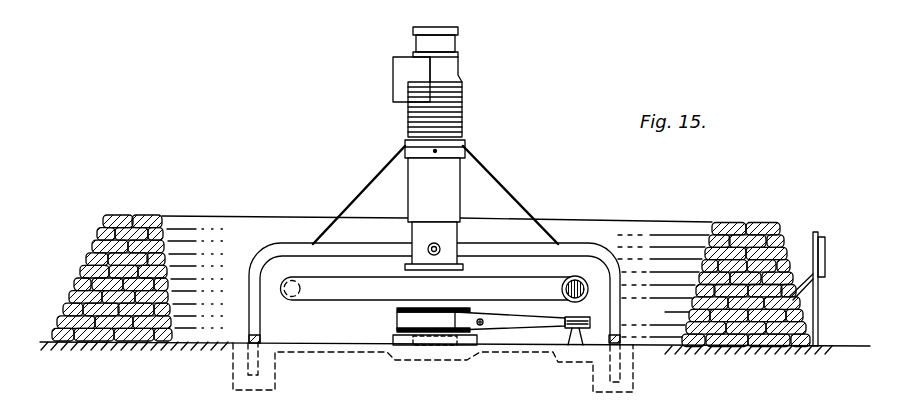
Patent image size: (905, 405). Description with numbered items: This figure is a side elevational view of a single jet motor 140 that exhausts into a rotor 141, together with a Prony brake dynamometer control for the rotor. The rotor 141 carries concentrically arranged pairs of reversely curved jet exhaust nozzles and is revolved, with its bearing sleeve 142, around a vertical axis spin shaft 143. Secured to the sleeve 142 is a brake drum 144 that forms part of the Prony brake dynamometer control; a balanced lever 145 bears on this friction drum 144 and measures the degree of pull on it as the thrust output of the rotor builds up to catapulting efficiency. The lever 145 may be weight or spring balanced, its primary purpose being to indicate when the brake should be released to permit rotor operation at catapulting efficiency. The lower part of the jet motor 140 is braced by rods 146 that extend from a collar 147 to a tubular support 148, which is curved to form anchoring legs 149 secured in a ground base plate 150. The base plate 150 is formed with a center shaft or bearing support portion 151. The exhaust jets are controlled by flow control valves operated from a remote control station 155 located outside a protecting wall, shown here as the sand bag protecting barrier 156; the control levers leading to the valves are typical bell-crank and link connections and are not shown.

The single jet motor 140 is at (462, 138).
The rotor 141 is at (552, 288).
The bearing sleeve 142 is at (456, 273).
The vertical axis spin shaft 143 is at (430, 346).
The brake drum 144 is at (397, 327).
The balanced lever 145 is at (537, 320).
The rods 146 is at (524, 183).
The collar 147 is at (408, 148).
The tubular support 148 is at (572, 243).
The anchoring legs 149 is at (615, 332).
The ground base plate 150 is at (248, 383).
The center shaft or bearing support portion 151 is at (466, 346).
The remote control station 155 is at (814, 232).
The sand bag protecting barrier 156 is at (728, 222).